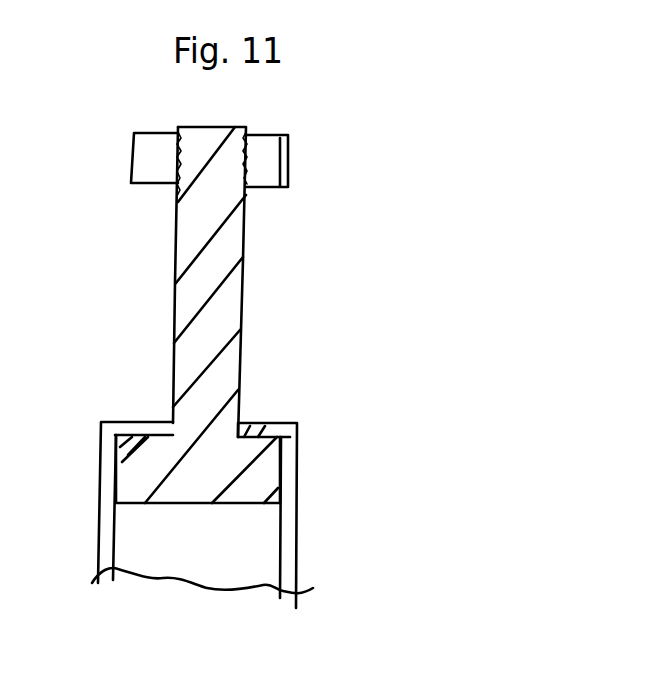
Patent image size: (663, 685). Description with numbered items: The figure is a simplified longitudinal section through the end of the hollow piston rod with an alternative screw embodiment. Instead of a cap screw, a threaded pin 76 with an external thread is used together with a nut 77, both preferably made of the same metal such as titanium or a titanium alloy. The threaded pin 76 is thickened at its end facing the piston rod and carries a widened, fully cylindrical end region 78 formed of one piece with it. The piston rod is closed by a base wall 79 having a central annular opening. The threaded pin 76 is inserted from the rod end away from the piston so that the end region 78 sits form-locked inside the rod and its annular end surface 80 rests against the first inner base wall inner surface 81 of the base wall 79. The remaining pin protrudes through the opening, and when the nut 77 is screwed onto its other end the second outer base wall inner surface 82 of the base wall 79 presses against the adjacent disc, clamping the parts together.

The threaded pin 76 is at (217, 263).
The nut 77 is at (262, 160).
The end region 78 is at (252, 473).
The base wall 79 is at (259, 432).
The annular end surface 80 is at (255, 435).
The first inner base wall inner surface 81 is at (150, 437).
The second outer base wall inner surface 82 is at (142, 422).